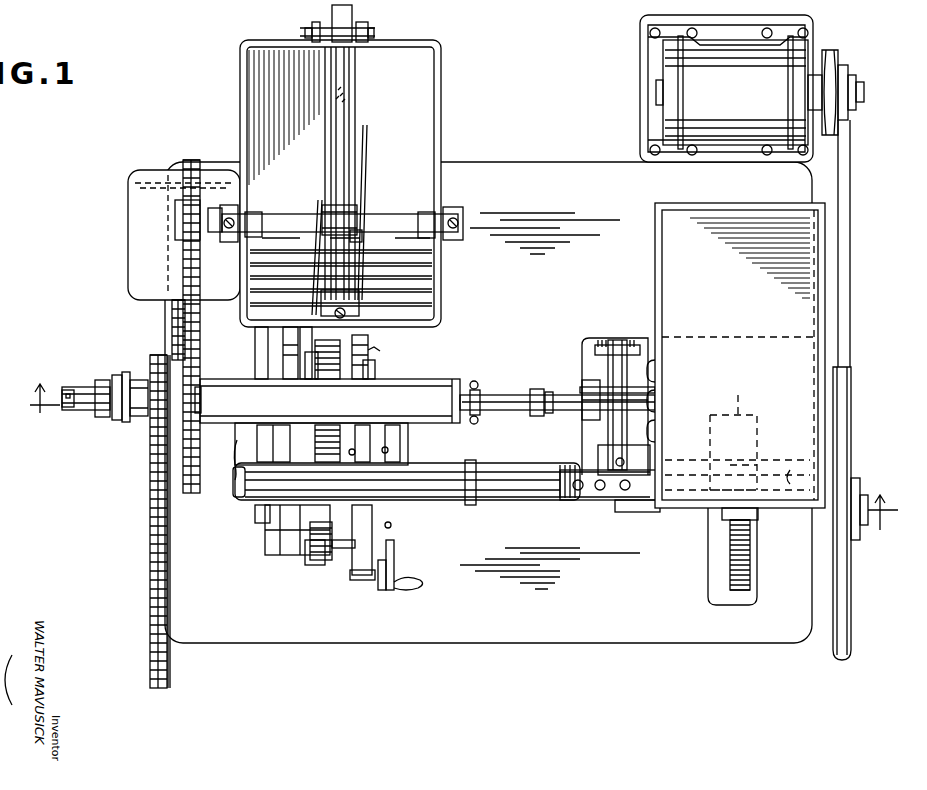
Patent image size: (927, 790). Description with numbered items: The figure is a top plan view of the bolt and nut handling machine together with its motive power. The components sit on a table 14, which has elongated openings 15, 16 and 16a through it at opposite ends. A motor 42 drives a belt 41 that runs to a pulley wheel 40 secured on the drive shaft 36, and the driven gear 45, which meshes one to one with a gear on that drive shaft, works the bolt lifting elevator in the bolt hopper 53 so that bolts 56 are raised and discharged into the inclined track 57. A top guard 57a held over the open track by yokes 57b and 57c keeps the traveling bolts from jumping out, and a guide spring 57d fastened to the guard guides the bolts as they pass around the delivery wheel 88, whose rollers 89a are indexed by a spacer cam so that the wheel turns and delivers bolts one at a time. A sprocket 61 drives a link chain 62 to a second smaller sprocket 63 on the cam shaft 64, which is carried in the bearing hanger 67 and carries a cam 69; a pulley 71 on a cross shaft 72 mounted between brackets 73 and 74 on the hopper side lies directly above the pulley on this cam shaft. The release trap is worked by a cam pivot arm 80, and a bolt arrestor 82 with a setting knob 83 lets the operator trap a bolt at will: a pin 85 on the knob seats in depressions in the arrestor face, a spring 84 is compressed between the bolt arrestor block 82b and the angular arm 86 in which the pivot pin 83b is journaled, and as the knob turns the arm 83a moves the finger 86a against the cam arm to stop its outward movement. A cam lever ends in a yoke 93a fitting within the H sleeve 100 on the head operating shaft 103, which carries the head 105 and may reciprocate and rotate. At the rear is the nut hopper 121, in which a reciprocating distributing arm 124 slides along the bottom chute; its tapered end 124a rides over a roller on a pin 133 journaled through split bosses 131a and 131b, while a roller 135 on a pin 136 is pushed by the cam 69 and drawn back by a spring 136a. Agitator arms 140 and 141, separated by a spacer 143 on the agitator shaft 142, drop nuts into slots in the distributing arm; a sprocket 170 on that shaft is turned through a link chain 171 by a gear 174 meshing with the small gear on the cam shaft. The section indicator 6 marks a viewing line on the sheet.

The table 14 is at (526, 634).
The elongated opening 15 is at (262, 522).
The elongated opening 16 is at (582, 445).
The elongated opening 16a is at (712, 585).
The drive shaft 36 is at (862, 500).
The pulley wheel 40 is at (855, 535).
The belt 41 is at (845, 298).
The motor 42 is at (800, 58).
The driven gear 45 is at (750, 568).
The bolt hopper 53 is at (820, 452).
The bolts 56 is at (572, 498).
The inclined track 57 is at (405, 470).
The top guard 57a is at (430, 485).
The yoke 57b is at (476, 500).
The yoke 57c is at (235, 495).
The guide spring 57d is at (222, 457).
The sprocket 61 is at (150, 588).
The link chain 62 is at (150, 603).
The second smaller sprocket 63 is at (192, 423).
The cam shaft 64 is at (482, 395).
The bearing hanger 67 is at (420, 388).
The cam 69 is at (368, 451).
The pulley 71 is at (582, 390).
The cross shaft 72 is at (610, 370).
The bracket 73 is at (617, 342).
The bracket 74 is at (598, 450).
The cam pivot arm 80 is at (310, 553).
The bolt arrestor 82 is at (368, 580).
The bolt arrestor block 82b is at (355, 570).
The setting knob 83 is at (408, 592).
The arm 83a is at (394, 570).
The pivot pin 83b is at (388, 532).
The spring 84 is at (345, 550).
The pin 85 is at (382, 590).
The angular arm 86 is at (340, 528).
The finger 86a is at (318, 565).
The delivery wheel 88 is at (270, 427).
The rollers 89a is at (318, 372).
The yoke 93a is at (118, 420).
The H sleeve 100 is at (85, 410).
The head operating shaft 103 is at (122, 375).
The head 105 is at (66, 386).
The nut hopper 121 is at (441, 88).
The reciprocating distributing arm 124 is at (345, 185).
The tapered end 124a is at (345, 78).
The split boss 131a is at (368, 30).
The split boss 131b is at (332, 30).
The pin 133 is at (312, 37).
The roller 135 is at (394, 355).
The pin 136 is at (375, 372).
The spring 136a is at (374, 337).
The agitator arm 140 is at (365, 150).
The agitator arm 141 is at (315, 253).
The agitator shaft 142 is at (375, 213).
The spacer 143 is at (362, 236).
The sprocket 170 is at (190, 210).
The link chain 171 is at (185, 252).
The gear 174 is at (322, 353).
The section line 6 is at (464, 457).